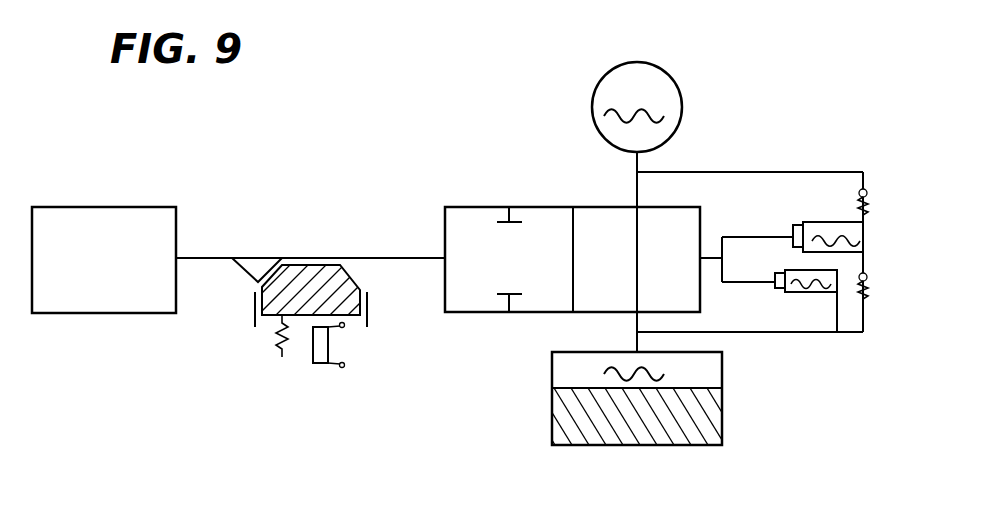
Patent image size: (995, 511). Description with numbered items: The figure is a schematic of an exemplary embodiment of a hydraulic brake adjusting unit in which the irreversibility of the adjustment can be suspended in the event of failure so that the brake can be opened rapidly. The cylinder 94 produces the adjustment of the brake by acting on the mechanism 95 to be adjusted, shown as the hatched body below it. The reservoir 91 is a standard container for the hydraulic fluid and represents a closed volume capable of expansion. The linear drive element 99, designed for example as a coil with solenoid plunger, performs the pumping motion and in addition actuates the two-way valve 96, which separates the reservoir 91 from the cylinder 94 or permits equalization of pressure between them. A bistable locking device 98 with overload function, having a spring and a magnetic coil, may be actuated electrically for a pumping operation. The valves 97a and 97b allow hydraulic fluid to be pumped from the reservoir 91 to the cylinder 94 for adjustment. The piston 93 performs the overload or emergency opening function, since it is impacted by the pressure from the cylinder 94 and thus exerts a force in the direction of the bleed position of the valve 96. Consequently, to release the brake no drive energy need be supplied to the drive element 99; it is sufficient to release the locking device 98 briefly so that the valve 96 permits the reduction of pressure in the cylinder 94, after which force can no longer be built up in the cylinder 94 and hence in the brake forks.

The linear drive element 99 is at (62, 207).
The bistable locking device 98 is at (283, 358).
The two-way valve 96 is at (497, 207).
The reservoir 91 is at (665, 83).
The valve 97a is at (867, 208).
The valve 97b is at (867, 298).
The piston 93 is at (811, 293).
The cylinder 94 is at (722, 383).
The mechanism to be adjusted 95 is at (663, 445).